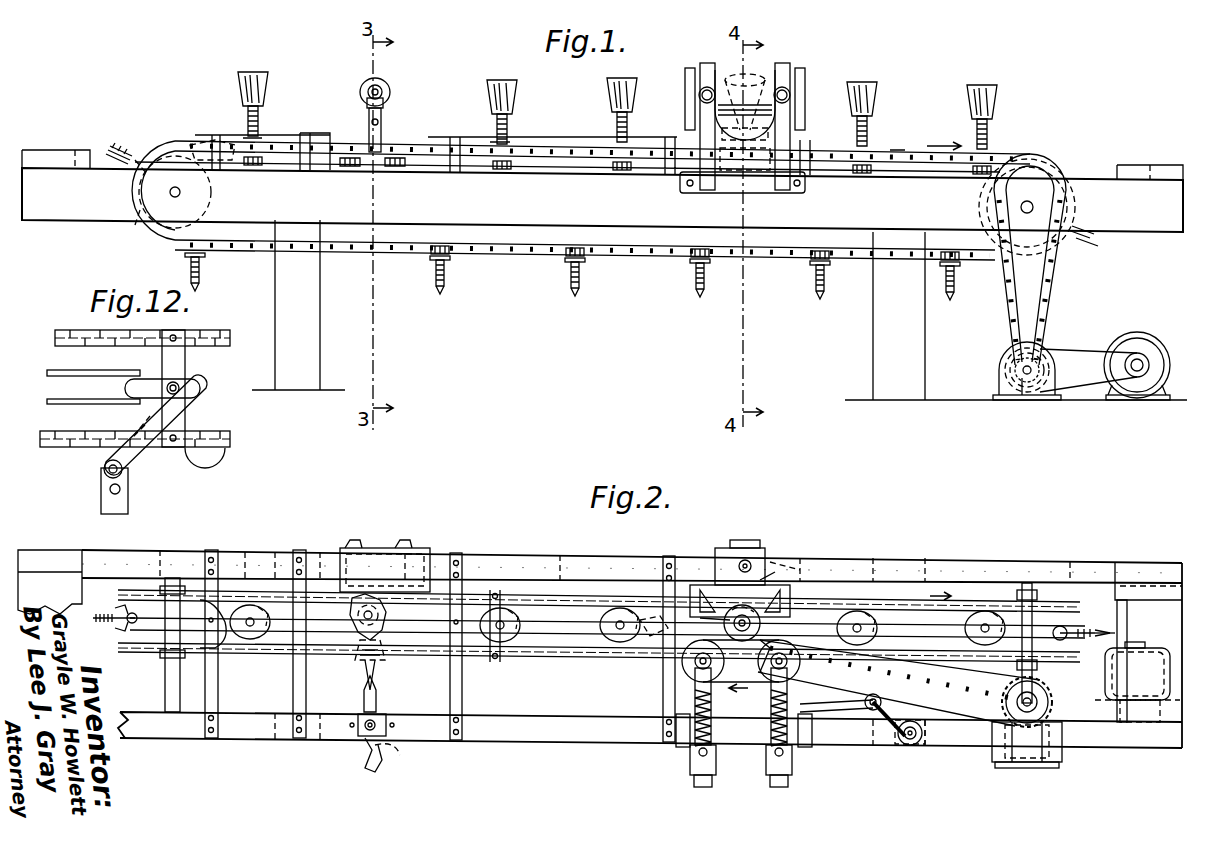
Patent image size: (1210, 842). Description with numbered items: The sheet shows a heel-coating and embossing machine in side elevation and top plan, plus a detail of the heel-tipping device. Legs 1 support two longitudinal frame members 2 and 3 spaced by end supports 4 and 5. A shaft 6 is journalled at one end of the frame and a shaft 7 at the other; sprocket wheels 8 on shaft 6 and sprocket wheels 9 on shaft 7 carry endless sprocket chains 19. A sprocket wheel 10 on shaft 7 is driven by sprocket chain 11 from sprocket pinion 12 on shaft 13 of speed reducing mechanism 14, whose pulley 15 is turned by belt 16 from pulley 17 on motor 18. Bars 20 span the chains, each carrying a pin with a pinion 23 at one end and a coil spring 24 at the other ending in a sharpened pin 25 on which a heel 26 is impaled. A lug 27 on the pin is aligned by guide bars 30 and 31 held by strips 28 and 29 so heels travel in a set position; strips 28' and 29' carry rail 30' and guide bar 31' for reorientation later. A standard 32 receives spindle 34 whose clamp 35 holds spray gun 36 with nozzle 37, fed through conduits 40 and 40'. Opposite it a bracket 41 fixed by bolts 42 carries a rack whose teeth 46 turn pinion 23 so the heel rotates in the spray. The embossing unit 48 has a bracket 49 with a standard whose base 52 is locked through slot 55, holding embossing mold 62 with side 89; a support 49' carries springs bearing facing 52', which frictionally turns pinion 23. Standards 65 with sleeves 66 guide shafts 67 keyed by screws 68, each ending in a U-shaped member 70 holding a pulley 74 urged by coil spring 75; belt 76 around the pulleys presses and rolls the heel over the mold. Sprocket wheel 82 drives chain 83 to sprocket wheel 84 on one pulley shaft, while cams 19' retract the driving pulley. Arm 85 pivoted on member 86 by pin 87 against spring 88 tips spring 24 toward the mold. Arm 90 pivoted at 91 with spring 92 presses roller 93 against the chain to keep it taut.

In FIG. 1, the legs 1 is at (345, 320).
In FIG. 1, the frame member 2 is at (68, 222).
In FIG. 2, the frame member 2 is at (512, 727).
In FIG. 2, the frame member 3 is at (522, 565).
In FIG. 1, the end support 4 is at (1135, 165).
In FIG. 2, the end support 4 is at (1138, 566).
In FIG. 1, the end support 5 is at (40, 152).
In FIG. 1, the shaft 6 is at (170, 194).
In FIG. 2, the shaft 6 is at (165, 679).
In FIG. 1, the shaft 7 is at (1021, 206).
In FIG. 2, the shaft 7 is at (1030, 583).
In FIG. 1, the sprocket wheels 8 is at (127, 232).
In FIG. 1, the sprocket wheels 9 is at (1058, 168).
In FIG. 1, the sprocket wheel 10 is at (1000, 214).
In FIG. 1, the sprocket chain 11 is at (1058, 262).
In FIG. 2, the sprocket chain 11 is at (1040, 768).
In FIG. 1, the sprocket pinion 12 is at (1025, 386).
In FIG. 1, the shaft 13 is at (1040, 370).
In FIG. 1, the speed reducing mechanism 14 is at (1002, 388).
In FIG. 2, the speed reducing mechanism 14 is at (1062, 755).
In FIG. 1, the pulley 15 is at (1005, 372).
In FIG. 1, the belt 16 is at (1062, 357).
In FIG. 2, the belt 16 is at (1105, 693).
In FIG. 1, the pulley 17 is at (1148, 363).
In FIG. 2, the pulley 17 is at (1135, 755).
In FIG. 1, the motor 18 is at (1140, 345).
In FIG. 2, the motor 18 is at (1105, 678).
In FIG. 1, the sprocket chains 19 is at (582, 210).
In FIG. 12, the sprocket chains 19 is at (124, 346).
In FIG. 2, the sprocket chains 19 is at (748, 564).
In FIG. 1, the cams 19' is at (520, 196).
In FIG. 12, the cams 19' is at (149, 457).
In FIG. 2, the cams 19' is at (517, 637).
In FIG. 12, the bars 20 is at (186, 420).
In FIG. 2, the bars 20 is at (118, 620).
In FIG. 1, the pinion 23 is at (262, 167).
In FIG. 2, the pinion 23 is at (386, 628).
In FIG. 1, the coil spring 24 is at (250, 120).
In FIG. 12, the coil spring 24 is at (185, 385).
In FIG. 2, the coil spring 24 is at (1100, 633).
In FIG. 1, the sharpened pin 25 is at (112, 146).
In FIG. 1, the heels 26 is at (245, 82).
In FIG. 2, the heels 26 is at (840, 626).
In FIG. 1, the lug 27 is at (245, 140).
In FIG. 12, the lug 27 is at (125, 388).
In FIG. 2, the lug 27 is at (248, 640).
In FIG. 1, the strips 28 is at (262, 170).
In FIG. 2, the strips 28 is at (272, 663).
In FIG. 2, the strips 28' is at (561, 666).
In FIG. 2, the strips 29 is at (255, 627).
In FIG. 2, the strips 29' is at (788, 621).
In FIG. 1, the guide bar 30 is at (184, 115).
In FIG. 2, the guide bar 30 is at (242, 644).
In FIG. 12, the rail 30' is at (77, 412).
In FIG. 2, the rail 30' is at (560, 651).
In FIG. 2, the guide bar 31 is at (599, 559).
In FIG. 12, the guide bar 31' is at (77, 384).
In FIG. 2, the guide bar 31' is at (599, 589).
In FIG. 1, the standard 32 is at (369, 127).
In FIG. 1, the spindle 34 is at (384, 105).
In FIG. 2, the clamp 35 is at (377, 700).
In FIG. 2, the spray gun 36 is at (376, 682).
In FIG. 2, the nozzle 37 is at (386, 668).
In FIG. 1, the flexible conduit 40 is at (400, 84).
In FIG. 2, the flexible conduit 40 is at (360, 751).
In FIG. 2, the flexible conduit 40' is at (399, 763).
In FIG. 2, the bracket 41 is at (420, 548).
In FIG. 2, the bolts 42 is at (375, 546).
In FIG. 1, the gear teeth 46 is at (366, 167).
In FIG. 2, the gear teeth 46 is at (352, 624).
In FIG. 2, the embossing unit 48 is at (770, 555).
In FIG. 2, the bracket 49 is at (786, 553).
In FIG. 1, the support 49' is at (745, 147).
In FIG. 2, the base portion 52 is at (761, 540).
In FIG. 1, the facing 52' is at (767, 173).
In FIG. 2, the slot 55 is at (740, 548).
In FIG. 1, the embossing mold 62 is at (778, 76).
In FIG. 2, the embossing mold 62 is at (788, 590).
In FIG. 1, the standards 65 is at (716, 193).
In FIG. 2, the standards 65 is at (812, 730).
In FIG. 2, the sleeve 66 is at (692, 762).
In FIG. 1, the shaft 67 is at (699, 95).
In FIG. 2, the shaft 67 is at (694, 781).
In FIG. 2, the screw 68 is at (766, 762).
In FIG. 1, the U-shaped member 70 is at (702, 72).
In FIG. 2, the pulley 74 is at (748, 672).
In FIG. 2, the coil spring 75 is at (835, 706).
In FIG. 2, the belt 76 is at (762, 684).
In FIG. 2, the sprocket wheel 82 is at (1005, 700).
In FIG. 2, the sprocket chain 83 is at (950, 686).
In FIG. 2, the sprocket wheel 84 is at (840, 660).
In FIG. 12, the arm 85 is at (200, 400).
In FIG. 2, the arm 85 is at (660, 640).
In FIG. 12, the member 86 is at (128, 498).
In FIG. 12, the pin 87 is at (103, 470).
In FIG. 12, the spring 88 is at (121, 488).
In FIG. 2, the side 89 is at (720, 618).
In FIG. 2, the arm 90 is at (890, 705).
In FIG. 2, the pivot 91 is at (908, 745).
In FIG. 2, the spring 92 is at (925, 740).
In FIG. 2, the roller 93 is at (866, 704).